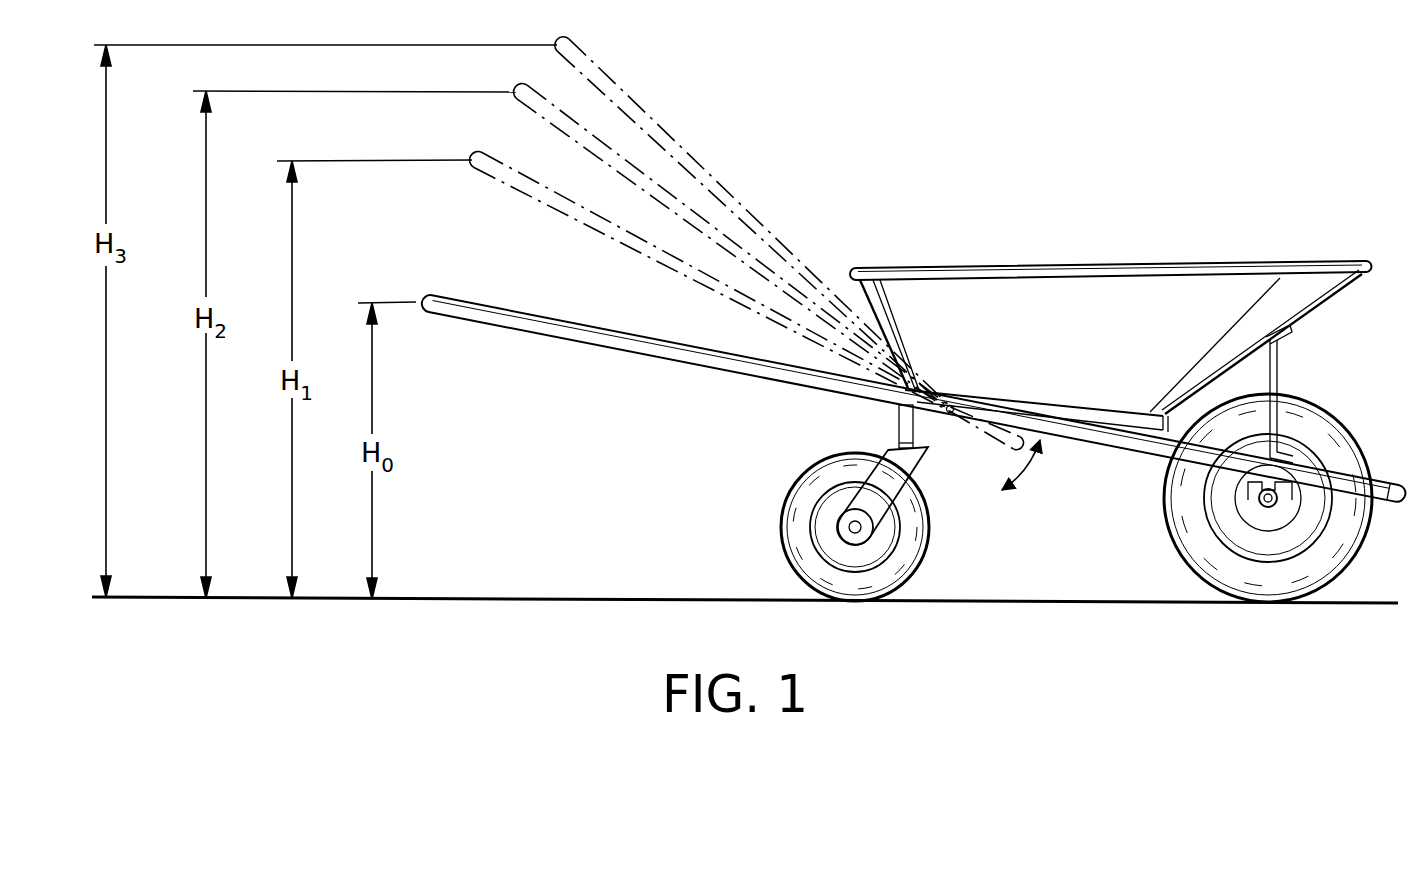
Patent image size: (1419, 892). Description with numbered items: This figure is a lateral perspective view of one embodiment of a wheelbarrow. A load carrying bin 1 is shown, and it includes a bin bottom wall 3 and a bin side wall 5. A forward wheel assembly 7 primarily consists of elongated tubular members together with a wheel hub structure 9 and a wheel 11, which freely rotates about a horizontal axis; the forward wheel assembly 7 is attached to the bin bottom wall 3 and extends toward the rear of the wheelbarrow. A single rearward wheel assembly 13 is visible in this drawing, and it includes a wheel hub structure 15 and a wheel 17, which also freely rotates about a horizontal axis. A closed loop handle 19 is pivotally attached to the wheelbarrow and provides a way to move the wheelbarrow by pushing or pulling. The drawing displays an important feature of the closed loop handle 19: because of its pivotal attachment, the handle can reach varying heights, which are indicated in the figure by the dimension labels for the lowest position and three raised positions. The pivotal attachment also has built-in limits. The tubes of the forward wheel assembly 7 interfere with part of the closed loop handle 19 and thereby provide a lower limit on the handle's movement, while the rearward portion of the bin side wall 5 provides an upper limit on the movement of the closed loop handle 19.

The load carrying bin 1 is at (1140, 268).
The bin bottom wall 3 is at (1050, 408).
The bin side wall 5 is at (1298, 308).
The forward wheel assembly 7 is at (1132, 452).
The wheel hub structure 9 is at (1242, 505).
The wheel 11 is at (1348, 536).
The rearward wheel assembly 13 is at (848, 450).
The wheel hub structure 15 is at (826, 528).
The wheel 17 is at (797, 490).
The closed loop handle 19 is at (472, 314).